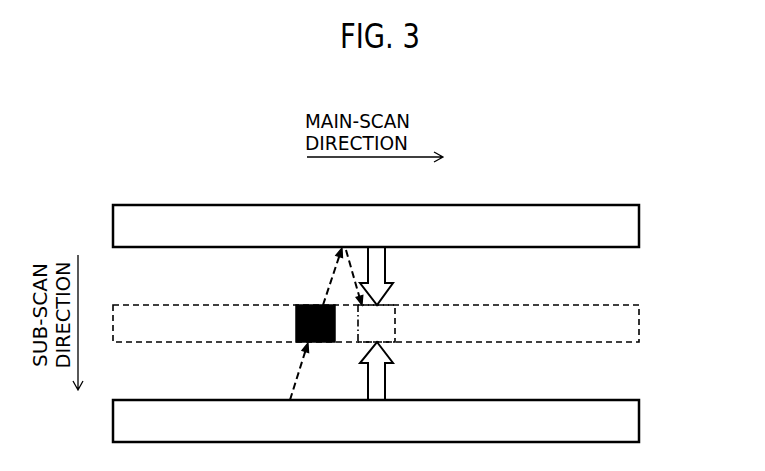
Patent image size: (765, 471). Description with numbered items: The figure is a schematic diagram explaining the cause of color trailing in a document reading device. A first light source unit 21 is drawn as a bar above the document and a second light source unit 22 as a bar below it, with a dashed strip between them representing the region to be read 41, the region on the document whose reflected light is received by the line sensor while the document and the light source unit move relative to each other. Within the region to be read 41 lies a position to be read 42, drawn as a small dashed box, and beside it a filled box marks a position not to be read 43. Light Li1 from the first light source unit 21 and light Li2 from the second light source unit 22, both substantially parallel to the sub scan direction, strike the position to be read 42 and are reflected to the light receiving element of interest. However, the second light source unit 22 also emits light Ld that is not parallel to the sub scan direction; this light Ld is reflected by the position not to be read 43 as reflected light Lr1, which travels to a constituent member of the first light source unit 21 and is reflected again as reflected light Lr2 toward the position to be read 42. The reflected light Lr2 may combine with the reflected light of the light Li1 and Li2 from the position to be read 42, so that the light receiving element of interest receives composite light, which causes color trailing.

The first light source unit 21 is at (640, 225).
The second light source unit 22 is at (640, 420).
The region to be read 41 is at (640, 323).
The position to be read 42 is at (397, 324).
The position not to be read 43 is at (296, 326).
The light Li1 is at (392, 268).
The light Li2 is at (392, 378).
The light Ld is at (300, 373).
The reflected light Lr1 is at (333, 276).
The reflected light Lr2 is at (354, 272).